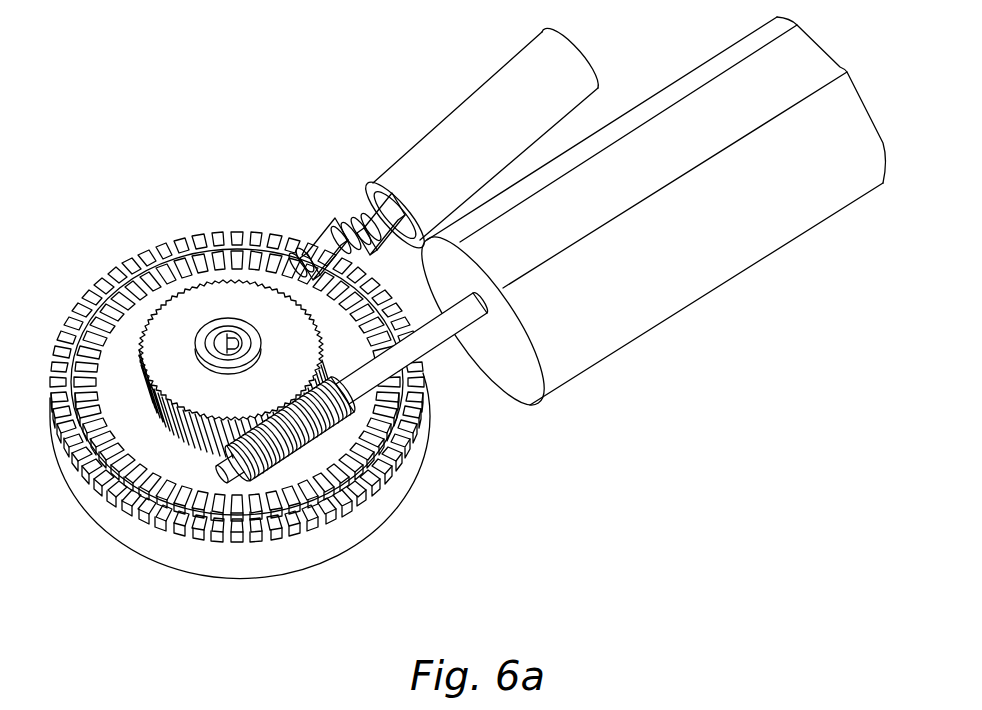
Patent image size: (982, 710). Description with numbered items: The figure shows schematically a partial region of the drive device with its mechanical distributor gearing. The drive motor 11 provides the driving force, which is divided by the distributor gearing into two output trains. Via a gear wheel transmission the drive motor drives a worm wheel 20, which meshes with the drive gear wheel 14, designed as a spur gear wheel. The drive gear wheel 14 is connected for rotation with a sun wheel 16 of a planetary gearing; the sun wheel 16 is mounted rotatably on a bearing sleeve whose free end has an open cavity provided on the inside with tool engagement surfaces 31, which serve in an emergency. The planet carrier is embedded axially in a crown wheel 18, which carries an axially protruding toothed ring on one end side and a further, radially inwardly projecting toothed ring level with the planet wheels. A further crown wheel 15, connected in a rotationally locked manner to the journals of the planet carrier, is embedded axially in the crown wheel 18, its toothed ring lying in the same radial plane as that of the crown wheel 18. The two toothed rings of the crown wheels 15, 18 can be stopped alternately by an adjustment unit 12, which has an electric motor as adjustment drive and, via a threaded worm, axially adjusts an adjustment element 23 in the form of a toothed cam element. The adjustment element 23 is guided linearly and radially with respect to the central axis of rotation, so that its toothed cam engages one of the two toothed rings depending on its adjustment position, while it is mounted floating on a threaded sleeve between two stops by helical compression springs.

The drive motor 11 is at (697, 280).
The adjustment unit 12 is at (487, 159).
The drive gear wheel 14 is at (207, 297).
The crown wheel 15 is at (265, 528).
The sun wheel 16 is at (202, 345).
The crown wheel 18 is at (368, 507).
The worm wheel 20 is at (372, 388).
The adjustment element 23 is at (333, 220).
The tool engagement surfaces 31 is at (240, 340).